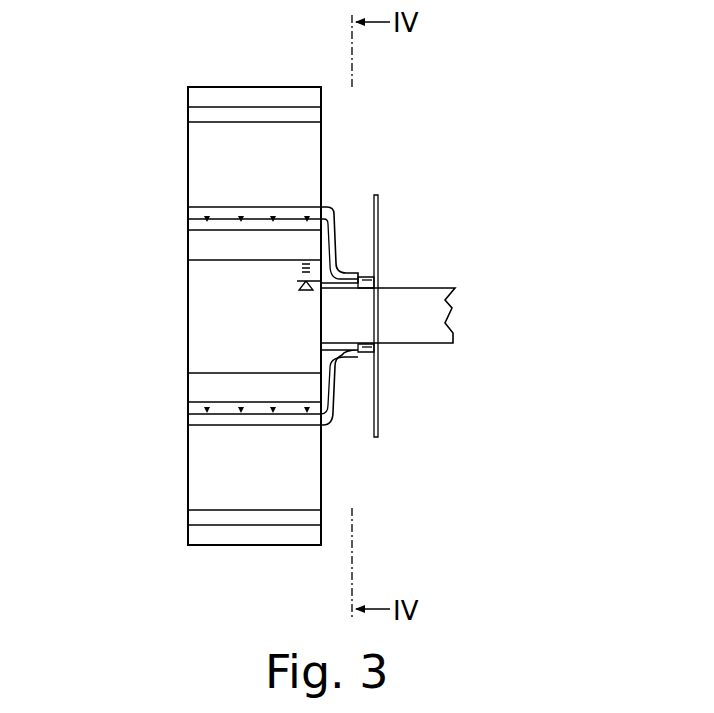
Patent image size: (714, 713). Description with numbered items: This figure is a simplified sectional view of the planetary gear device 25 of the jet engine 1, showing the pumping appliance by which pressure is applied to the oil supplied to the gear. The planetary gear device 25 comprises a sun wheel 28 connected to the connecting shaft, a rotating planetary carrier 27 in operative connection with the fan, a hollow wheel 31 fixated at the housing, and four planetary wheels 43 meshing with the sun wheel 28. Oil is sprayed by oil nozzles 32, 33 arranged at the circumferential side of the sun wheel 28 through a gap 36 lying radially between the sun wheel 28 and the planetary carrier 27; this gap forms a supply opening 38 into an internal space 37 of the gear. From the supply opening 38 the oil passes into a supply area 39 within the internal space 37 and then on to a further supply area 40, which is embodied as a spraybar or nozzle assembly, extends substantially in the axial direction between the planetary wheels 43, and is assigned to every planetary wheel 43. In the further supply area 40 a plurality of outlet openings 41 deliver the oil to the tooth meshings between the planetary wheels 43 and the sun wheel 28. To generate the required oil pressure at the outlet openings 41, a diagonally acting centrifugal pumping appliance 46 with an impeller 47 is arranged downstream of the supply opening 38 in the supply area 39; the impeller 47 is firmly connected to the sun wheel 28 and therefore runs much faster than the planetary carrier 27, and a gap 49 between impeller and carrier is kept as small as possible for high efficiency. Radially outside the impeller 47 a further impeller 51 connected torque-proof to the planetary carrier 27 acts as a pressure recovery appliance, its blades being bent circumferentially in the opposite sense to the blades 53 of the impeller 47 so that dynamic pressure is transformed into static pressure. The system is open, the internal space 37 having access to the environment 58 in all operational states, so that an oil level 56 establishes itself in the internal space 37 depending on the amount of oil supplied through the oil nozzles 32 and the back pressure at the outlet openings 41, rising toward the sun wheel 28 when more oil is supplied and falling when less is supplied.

The jet engine 1 is at (158, 105).
The planetary gear device 25 is at (255, 74).
The planetary carrier 27 is at (337, 198).
The sun wheel 28 is at (228, 326).
The hollow wheel 31 is at (222, 97).
The oil nozzle 32 is at (379, 203).
The oil nozzle 33 is at (380, 410).
The gap 36 is at (373, 350).
The internal space 37 is at (344, 264).
The supply opening 38 is at (378, 285).
The supply area 39 is at (376, 358).
The further supply area 40 is at (200, 226).
The outlet openings 41 is at (307, 218).
The planetary wheels 43 is at (312, 138).
The centrifugal pumping appliance 46 is at (334, 383).
The impeller 47 is at (328, 365).
The gap 49 is at (335, 234).
The further impeller 51 is at (337, 434).
The blades 53 is at (300, 268).
The oil level 56 is at (298, 289).
The environment 58 is at (523, 285).